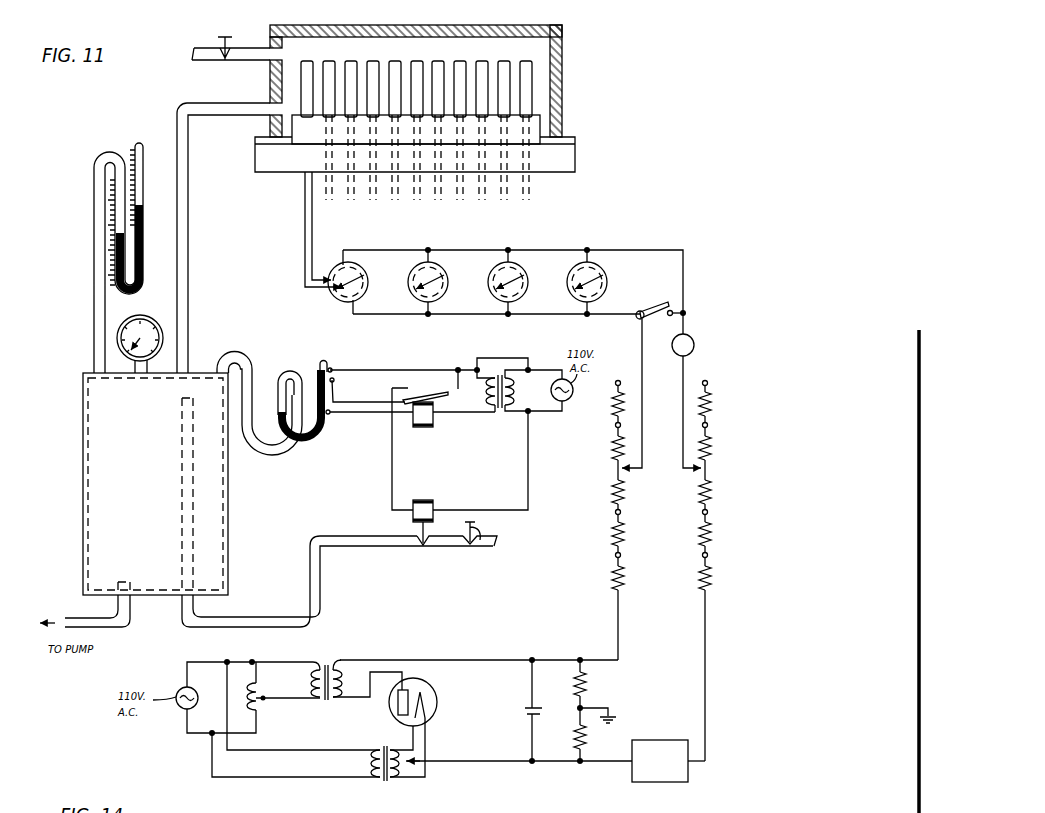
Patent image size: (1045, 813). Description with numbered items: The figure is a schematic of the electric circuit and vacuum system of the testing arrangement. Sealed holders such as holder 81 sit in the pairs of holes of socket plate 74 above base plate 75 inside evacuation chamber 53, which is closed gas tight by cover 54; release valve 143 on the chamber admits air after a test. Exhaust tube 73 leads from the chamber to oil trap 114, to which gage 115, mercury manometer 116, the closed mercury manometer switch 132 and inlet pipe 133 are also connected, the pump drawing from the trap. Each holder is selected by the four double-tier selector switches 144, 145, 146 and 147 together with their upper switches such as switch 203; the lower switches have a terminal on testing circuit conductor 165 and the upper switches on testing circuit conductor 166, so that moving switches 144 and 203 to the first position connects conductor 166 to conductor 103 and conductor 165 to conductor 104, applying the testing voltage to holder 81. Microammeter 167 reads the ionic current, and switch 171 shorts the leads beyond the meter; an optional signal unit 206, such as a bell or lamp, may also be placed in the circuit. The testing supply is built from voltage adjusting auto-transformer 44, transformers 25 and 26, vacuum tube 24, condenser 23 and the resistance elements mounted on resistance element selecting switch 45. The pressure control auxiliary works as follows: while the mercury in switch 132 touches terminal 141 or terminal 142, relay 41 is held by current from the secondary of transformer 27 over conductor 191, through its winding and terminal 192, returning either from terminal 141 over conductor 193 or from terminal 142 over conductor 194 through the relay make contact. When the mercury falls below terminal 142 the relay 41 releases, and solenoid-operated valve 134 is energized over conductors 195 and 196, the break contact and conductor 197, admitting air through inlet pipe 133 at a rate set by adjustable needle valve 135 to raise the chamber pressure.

The release valve 143 is at (250, 24).
The hermetically sealed holder 81 is at (313, 62).
The cover 54 is at (493, 25).
The evacuation chamber 53 is at (553, 50).
The socket plate 74 is at (545, 121).
The base plate 75 is at (577, 155).
The conductor 104 is at (305, 216).
The conductor 103 is at (312, 237).
The testing circuit conductor 166 is at (570, 249).
The upper selector switch 203 is at (334, 264).
The selector switch 144 is at (353, 308).
The selector switch 145 is at (425, 300).
The selector switch 146 is at (510, 300).
The selector switch 147 is at (587, 300).
The testing circuit conductor 165 is at (636, 311).
The shorting switch 171 is at (672, 304).
The microammeter 167 is at (694, 340).
The resistance element selecting switch 45 is at (681, 467).
The condenser 23 is at (527, 711).
The signal unit 206 is at (657, 776).
The voltage adjusting auto-transformer 44 is at (266, 700).
The transformer 25 is at (325, 666).
The vacuum tube 24 is at (437, 694).
The transformer 26 is at (387, 779).
The conductor 193 is at (386, 369).
The conductor 194 is at (352, 402).
The conductor 196 is at (523, 343).
The transformer 27 is at (500, 409).
The holding relay 41 is at (431, 415).
The terminal 192 is at (327, 415).
The conductor 191 is at (472, 413).
The conductor 197 is at (392, 472).
The conductor 195 is at (528, 478).
The solenoid-operated valve 134 is at (440, 497).
The inlet pipe 133 is at (447, 542).
The adjustable needle valve 135 is at (480, 541).
The oil trap 114 is at (98, 412).
The exhaust tube 73 is at (189, 213).
The mercury manometer 116 is at (145, 152).
The gage 115 is at (157, 326).
The mercury manometer switch 132 is at (280, 396).
The terminal 142 is at (319, 378).
The terminal 141 is at (328, 371).